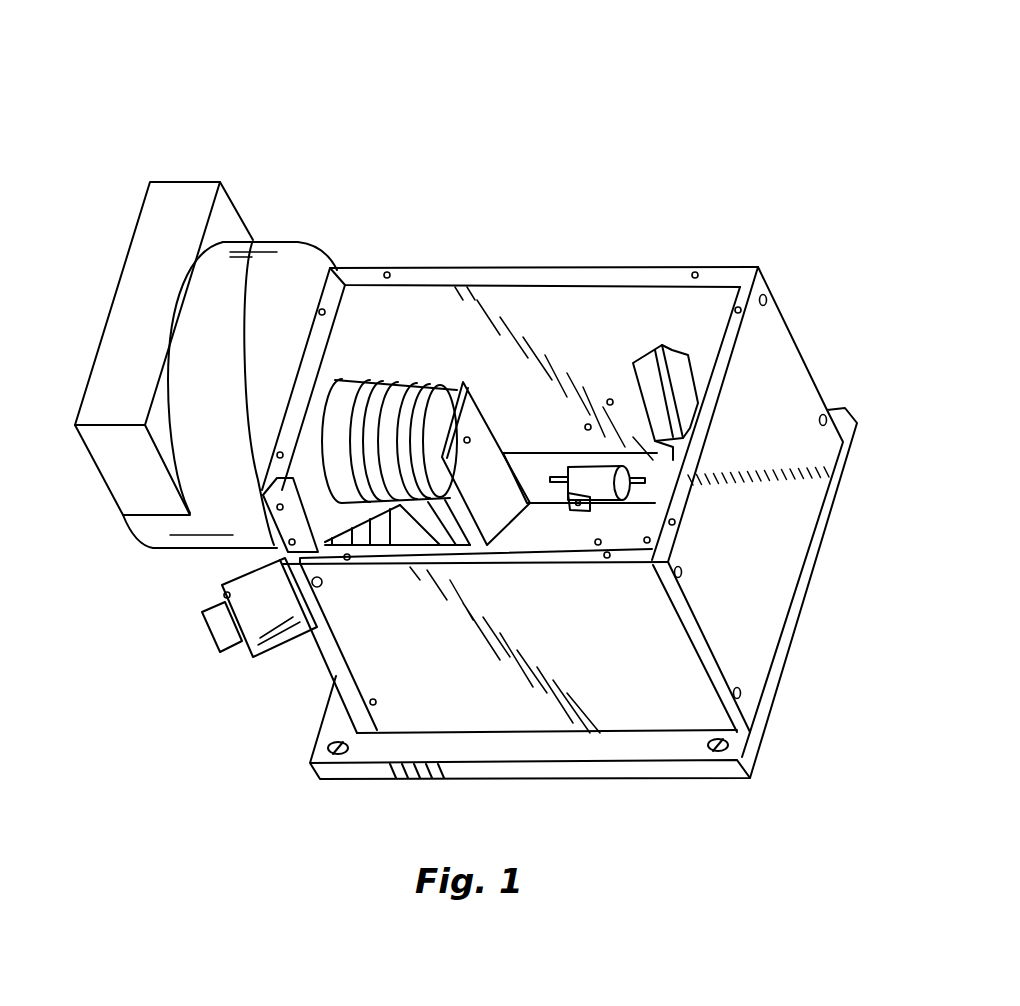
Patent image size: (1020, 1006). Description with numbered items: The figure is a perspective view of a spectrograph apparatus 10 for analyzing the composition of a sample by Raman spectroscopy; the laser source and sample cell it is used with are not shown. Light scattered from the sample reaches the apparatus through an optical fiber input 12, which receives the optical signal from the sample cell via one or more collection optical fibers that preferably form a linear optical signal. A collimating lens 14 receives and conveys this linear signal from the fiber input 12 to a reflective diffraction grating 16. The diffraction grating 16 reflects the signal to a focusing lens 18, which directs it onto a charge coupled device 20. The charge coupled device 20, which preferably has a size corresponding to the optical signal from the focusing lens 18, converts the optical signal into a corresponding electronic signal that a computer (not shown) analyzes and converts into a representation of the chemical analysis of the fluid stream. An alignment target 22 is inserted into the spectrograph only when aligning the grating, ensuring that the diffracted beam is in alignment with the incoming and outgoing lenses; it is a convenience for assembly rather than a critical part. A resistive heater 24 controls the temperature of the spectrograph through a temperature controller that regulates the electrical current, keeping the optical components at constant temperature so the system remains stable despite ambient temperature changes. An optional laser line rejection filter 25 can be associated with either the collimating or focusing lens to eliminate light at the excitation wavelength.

The spectrograph apparatus 10 is at (586, 110).
The optical fiber input 12 is at (222, 630).
The collimating lens 14 is at (392, 537).
The reflective diffraction grating 16 is at (655, 367).
The focusing lens 18 is at (405, 360).
The charge coupled device 20 is at (153, 242).
The alignment target 22 is at (473, 422).
The resistive heater 24 is at (597, 480).
The laser line rejection filter 25 is at (453, 527).